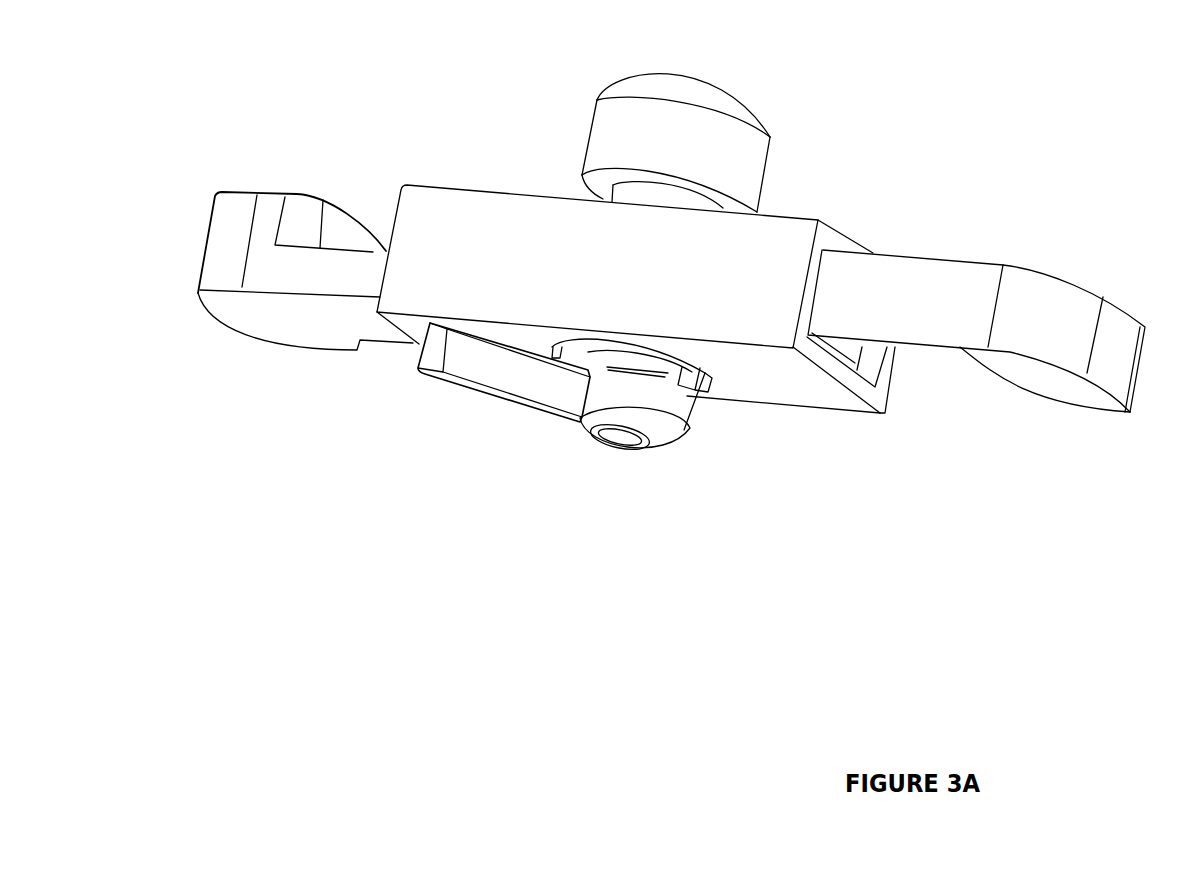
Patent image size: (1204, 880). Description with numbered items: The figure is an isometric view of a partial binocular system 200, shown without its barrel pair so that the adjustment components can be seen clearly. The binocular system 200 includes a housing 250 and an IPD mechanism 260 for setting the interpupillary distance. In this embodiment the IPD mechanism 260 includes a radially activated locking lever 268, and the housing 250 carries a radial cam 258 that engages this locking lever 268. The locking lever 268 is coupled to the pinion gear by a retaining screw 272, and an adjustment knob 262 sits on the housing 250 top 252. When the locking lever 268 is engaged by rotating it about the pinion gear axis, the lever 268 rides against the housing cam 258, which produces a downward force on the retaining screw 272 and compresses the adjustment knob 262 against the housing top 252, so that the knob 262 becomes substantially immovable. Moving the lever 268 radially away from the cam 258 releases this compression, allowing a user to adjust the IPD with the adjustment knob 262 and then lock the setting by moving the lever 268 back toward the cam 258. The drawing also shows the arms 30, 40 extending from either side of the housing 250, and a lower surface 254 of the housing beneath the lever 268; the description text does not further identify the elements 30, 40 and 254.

The partial binocular system 200 is at (641, 711).
The first clip arm 30 is at (213, 198).
The second clip arm 40 is at (1103, 412).
The housing 250 is at (478, 183).
The housing top 252 is at (792, 215).
The bottom surface of body 254 is at (852, 414).
The radial cam 258 is at (698, 388).
The IPD mechanism 260 is at (628, 60).
The adjustment knob 262 is at (723, 77).
The locking lever 268 is at (482, 392).
The retaining screw 272 is at (620, 434).